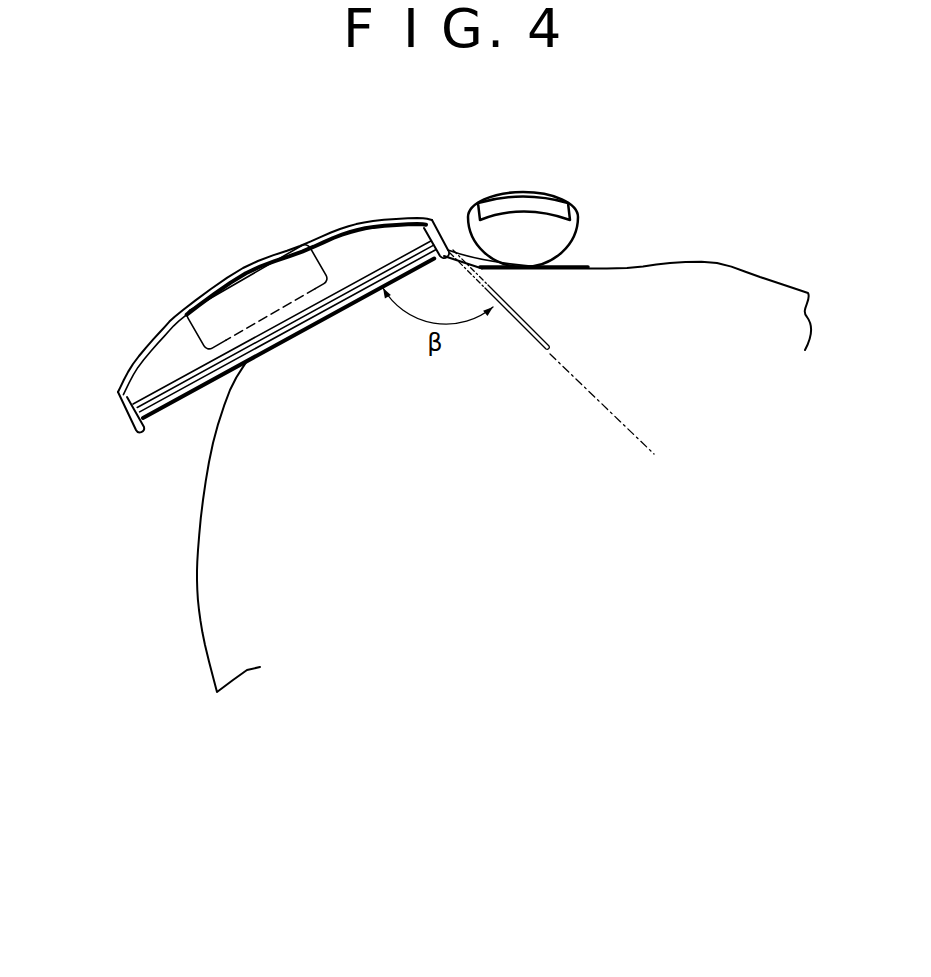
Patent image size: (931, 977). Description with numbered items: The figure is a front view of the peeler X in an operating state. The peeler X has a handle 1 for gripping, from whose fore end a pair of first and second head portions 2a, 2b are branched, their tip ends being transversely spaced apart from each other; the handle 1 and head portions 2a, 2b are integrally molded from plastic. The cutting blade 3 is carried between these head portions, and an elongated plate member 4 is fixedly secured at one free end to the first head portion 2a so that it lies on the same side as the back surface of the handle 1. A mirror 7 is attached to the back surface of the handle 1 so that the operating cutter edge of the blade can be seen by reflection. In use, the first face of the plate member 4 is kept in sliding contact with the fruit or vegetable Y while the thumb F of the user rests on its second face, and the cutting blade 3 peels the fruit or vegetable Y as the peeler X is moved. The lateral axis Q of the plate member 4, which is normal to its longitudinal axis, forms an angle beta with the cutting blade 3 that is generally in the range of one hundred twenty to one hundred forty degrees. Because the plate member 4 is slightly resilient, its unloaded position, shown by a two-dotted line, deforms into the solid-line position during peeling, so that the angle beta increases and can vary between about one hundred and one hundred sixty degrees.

The handle 1 is at (300, 277).
The first head portion 2a is at (443, 233).
The second head portion 2b is at (130, 412).
The cutting blade 3 is at (183, 371).
The plate member 4 is at (560, 268).
The mirror 7 is at (380, 253).
The thumb F is at (528, 191).
The peeler X is at (243, 270).
The fruit or vegetable Y is at (198, 600).
The lateral axis of the plate member Q is at (632, 412).